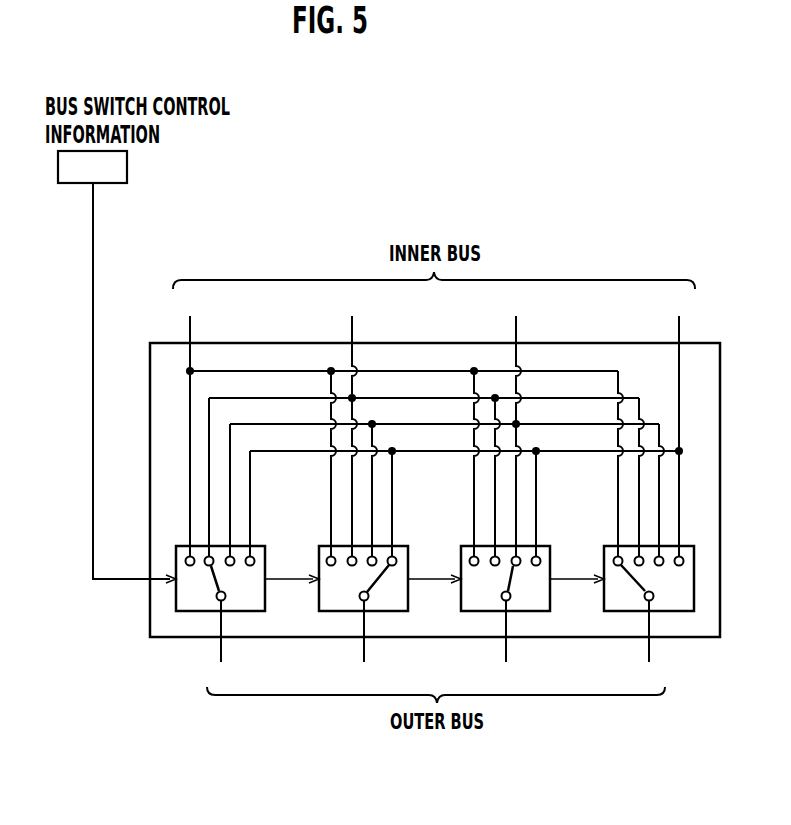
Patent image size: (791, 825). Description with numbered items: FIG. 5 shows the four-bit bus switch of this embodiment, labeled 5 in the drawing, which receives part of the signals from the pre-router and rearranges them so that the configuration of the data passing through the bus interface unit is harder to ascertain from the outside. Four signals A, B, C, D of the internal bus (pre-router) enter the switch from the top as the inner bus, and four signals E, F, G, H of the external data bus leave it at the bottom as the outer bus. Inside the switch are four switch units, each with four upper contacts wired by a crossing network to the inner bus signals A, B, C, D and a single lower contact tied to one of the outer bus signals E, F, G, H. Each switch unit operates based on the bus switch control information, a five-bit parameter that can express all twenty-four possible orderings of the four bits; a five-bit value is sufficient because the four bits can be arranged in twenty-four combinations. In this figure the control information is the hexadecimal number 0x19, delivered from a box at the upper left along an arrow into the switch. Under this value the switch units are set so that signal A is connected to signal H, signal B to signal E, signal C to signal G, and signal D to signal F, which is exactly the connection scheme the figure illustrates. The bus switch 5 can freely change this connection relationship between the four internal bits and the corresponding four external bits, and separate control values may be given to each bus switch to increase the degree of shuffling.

The bus switch 5 is at (102, 421).
The bus switch control information 0x19 is at (117, 367).
The signal A is at (190, 426).
The signal B is at (352, 426).
The signal C is at (516, 426).
The signal D is at (679, 426).
The signal E is at (221, 643).
The signal F is at (364, 643).
The signal G is at (506, 643).
The signal H is at (649, 643).